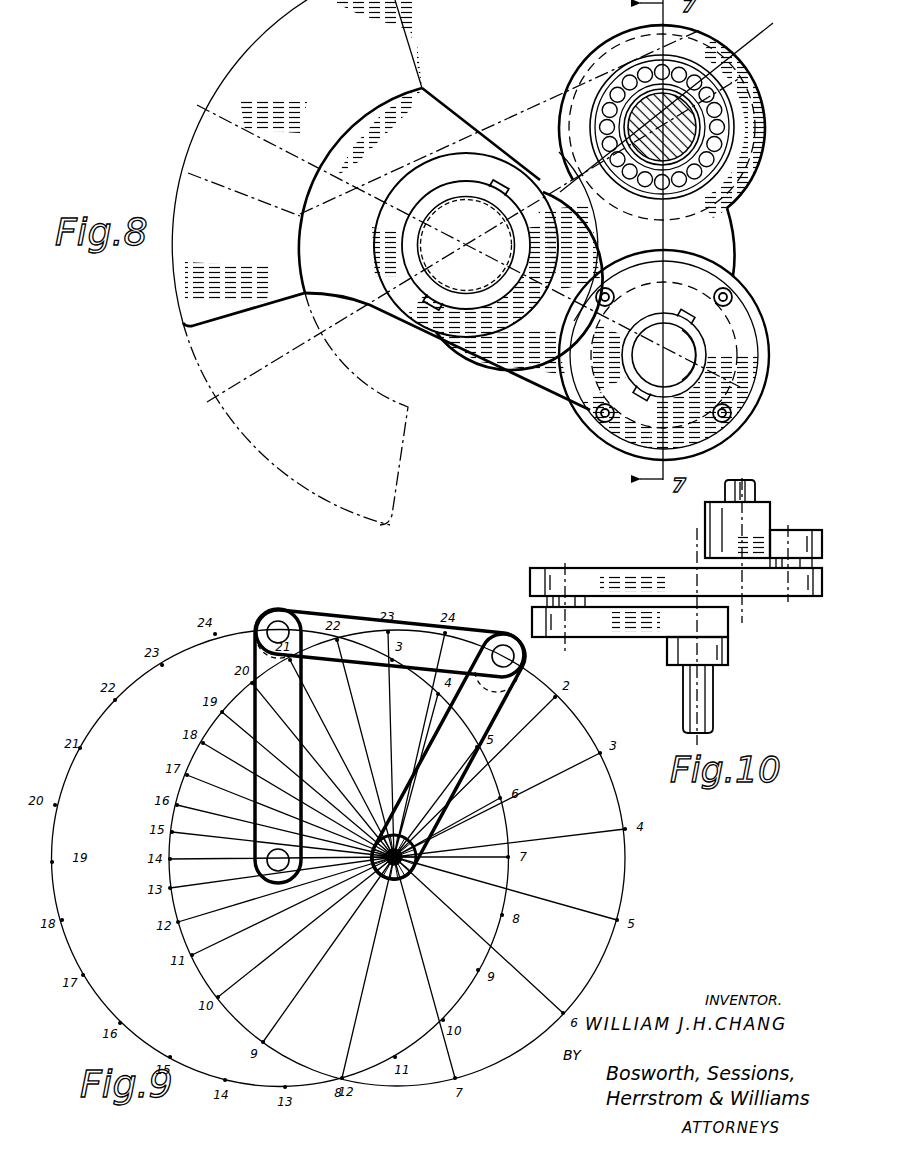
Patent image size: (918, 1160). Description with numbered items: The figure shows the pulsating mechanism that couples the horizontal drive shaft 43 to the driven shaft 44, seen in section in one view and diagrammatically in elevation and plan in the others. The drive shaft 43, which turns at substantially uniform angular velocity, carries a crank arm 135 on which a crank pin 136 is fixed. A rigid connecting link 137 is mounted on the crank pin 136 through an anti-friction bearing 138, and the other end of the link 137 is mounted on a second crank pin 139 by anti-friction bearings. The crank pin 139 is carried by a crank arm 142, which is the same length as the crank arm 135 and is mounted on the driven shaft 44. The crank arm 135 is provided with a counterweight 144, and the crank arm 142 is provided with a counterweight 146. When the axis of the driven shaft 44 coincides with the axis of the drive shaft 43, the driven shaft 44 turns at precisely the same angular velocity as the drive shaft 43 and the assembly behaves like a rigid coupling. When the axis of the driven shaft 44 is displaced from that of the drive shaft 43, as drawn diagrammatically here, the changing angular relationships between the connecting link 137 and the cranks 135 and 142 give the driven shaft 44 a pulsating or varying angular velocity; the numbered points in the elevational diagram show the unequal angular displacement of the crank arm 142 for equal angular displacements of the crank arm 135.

In FIG. 10, the horizontal drive shaft 43 is at (700, 698).
In FIG. 9, the horizontal drive shaft 43 is at (265, 872).
In FIG. 8, the driven shaft 44 is at (468, 205).
In FIG. 10, the driven shaft 44 is at (740, 492).
In FIG. 9, the driven shaft 44 is at (412, 885).
In FIG. 10, the crank arm 135 is at (590, 617).
In FIG. 9, the crank arm 135 is at (270, 725).
In FIG. 8, the crank pin 136 is at (683, 132).
In FIG. 9, the crank pin 136 is at (268, 622).
In FIG. 8, the rigid connecting link 137 is at (736, 240).
In FIG. 10, the rigid connecting link 137 is at (680, 585).
In FIG. 9, the rigid connecting link 137 is at (372, 645).
In FIG. 8, the anti-friction bearing 138 is at (692, 78).
In FIG. 8, the crank pin 139 is at (680, 360).
In FIG. 10, the crank pin 139 is at (778, 563).
In FIG. 9, the crank pin 139 is at (500, 645).
In FIG. 10, the crank arm 142 is at (770, 540).
In FIG. 9, the crank arm 142 is at (455, 776).
In FIG. 8, the counterweight 144 is at (315, 448).
In FIG. 8, the counterweight 146 is at (310, 56).